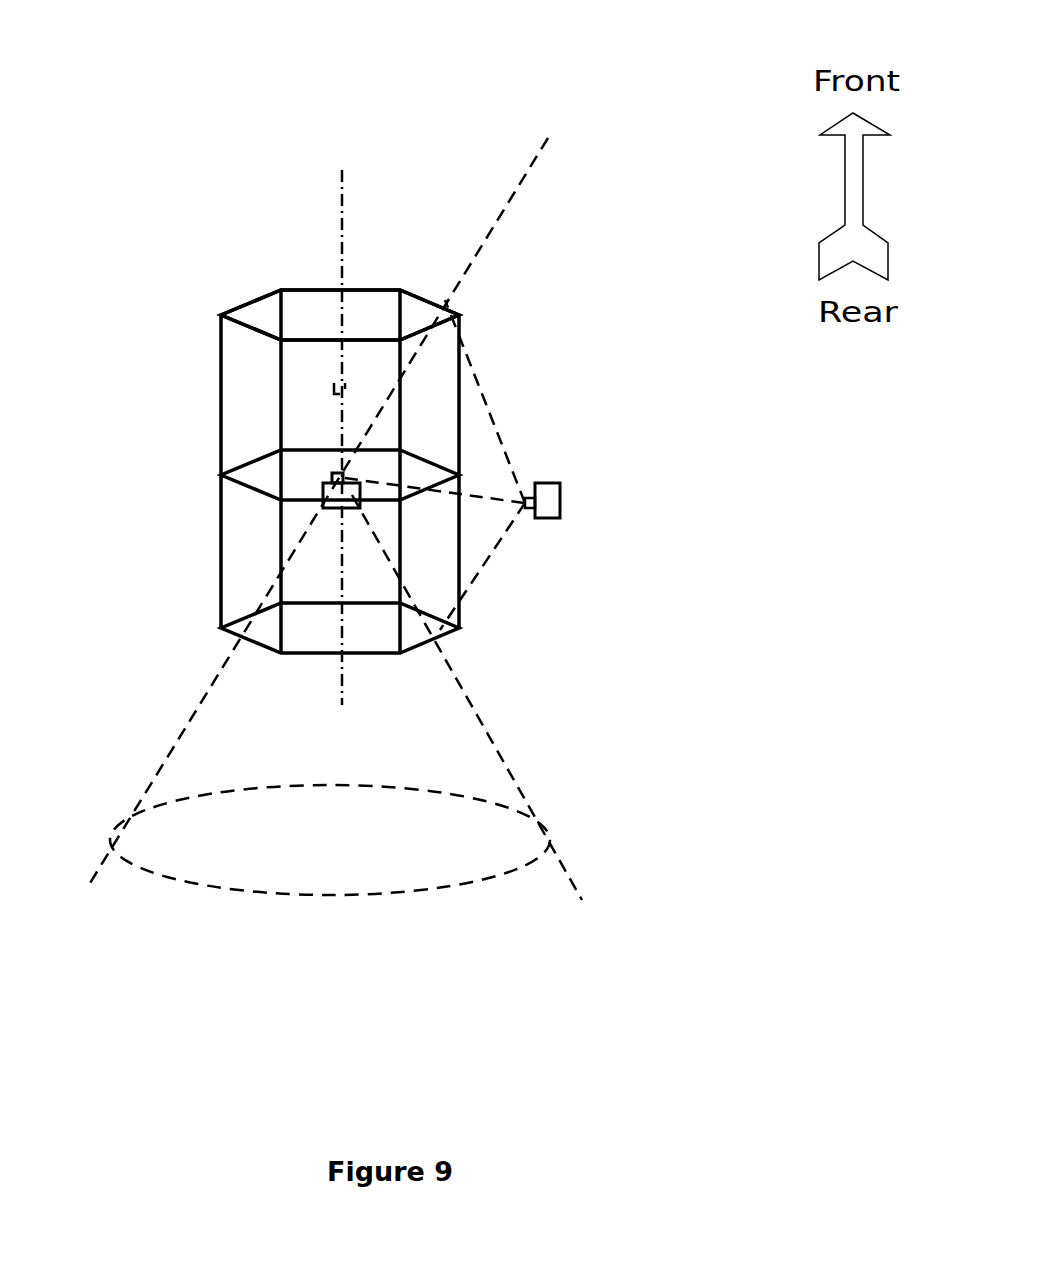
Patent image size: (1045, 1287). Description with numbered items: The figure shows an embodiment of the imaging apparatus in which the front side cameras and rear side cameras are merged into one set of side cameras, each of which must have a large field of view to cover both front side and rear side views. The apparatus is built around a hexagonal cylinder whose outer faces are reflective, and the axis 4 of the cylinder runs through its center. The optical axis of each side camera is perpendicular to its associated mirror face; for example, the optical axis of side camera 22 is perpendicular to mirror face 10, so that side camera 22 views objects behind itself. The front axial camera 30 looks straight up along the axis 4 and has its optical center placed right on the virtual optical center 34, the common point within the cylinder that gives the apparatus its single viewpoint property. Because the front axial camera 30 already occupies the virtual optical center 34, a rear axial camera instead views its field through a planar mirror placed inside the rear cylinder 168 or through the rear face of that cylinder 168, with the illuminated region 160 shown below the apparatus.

The axis 4 is at (342, 170).
The mirror face 10 is at (440, 338).
The side camera 22 is at (555, 508).
The front axial camera 30 is at (358, 504).
The virtual optical center 34 is at (336, 482).
The illuminated region 160 is at (450, 797).
The rear cylinder 168 is at (308, 318).